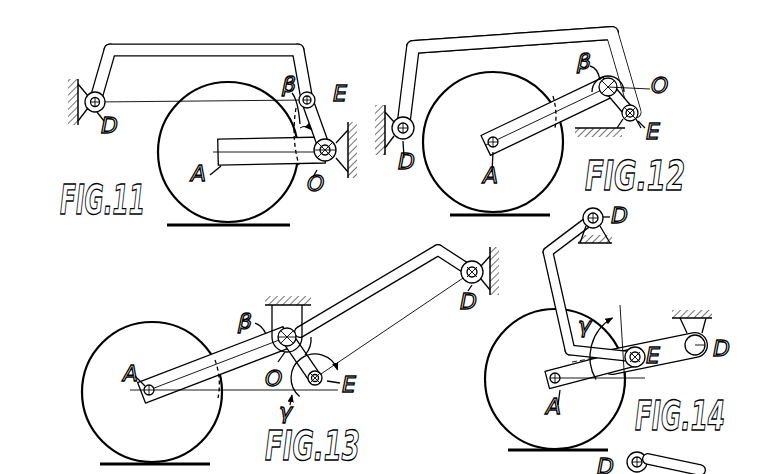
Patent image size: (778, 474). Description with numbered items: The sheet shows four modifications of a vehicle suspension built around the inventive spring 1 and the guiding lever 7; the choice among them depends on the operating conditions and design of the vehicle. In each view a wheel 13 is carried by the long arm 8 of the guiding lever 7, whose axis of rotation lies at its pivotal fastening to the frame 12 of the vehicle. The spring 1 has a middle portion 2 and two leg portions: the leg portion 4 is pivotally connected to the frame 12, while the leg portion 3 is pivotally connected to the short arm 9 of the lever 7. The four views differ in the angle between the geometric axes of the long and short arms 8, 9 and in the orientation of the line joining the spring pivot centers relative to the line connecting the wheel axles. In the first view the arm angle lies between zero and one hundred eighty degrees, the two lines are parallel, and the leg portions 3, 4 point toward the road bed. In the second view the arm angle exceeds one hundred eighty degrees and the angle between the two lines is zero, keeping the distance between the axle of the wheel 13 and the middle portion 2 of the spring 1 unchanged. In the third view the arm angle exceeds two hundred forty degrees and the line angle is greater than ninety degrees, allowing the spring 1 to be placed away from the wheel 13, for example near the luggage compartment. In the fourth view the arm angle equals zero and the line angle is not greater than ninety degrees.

In FIG. 11, the spring 1 is at (235, 42).
In FIG. 12, the spring 1 is at (452, 60).
In FIG. 13, the spring 1 is at (367, 288).
In FIG. 14, the spring 1 is at (566, 300).
In FIG. 12, the middle portion 2 is at (500, 40).
In FIG. 11, the leg portion 3 is at (312, 62).
In FIG. 12, the leg portion 3 is at (627, 52).
In FIG. 13, the leg portion 3 is at (318, 340).
In FIG. 14, the leg portion 3 is at (618, 345).
In FIG. 11, the leg portion 4 is at (105, 58).
In FIG. 12, the leg portion 4 is at (405, 68).
In FIG. 13, the leg portion 4 is at (436, 262).
In FIG. 14, the leg portion 4 is at (553, 256).
In FIG. 11, the guiding lever 7 is at (326, 172).
In FIG. 12, the guiding lever 7 is at (561, 90).
In FIG. 13, the guiding lever 7 is at (242, 382).
In FIG. 14, the guiding lever 7 is at (541, 374).
In FIG. 11, the long arm 8 is at (264, 142).
In FIG. 12, the long arm 8 is at (519, 141).
In FIG. 13, the long arm 8 is at (224, 345).
In FIG. 14, the long arm 8 is at (606, 373).
In FIG. 11, the short arm 9 is at (318, 134).
In FIG. 12, the short arm 9 is at (622, 129).
In FIG. 13, the short arm 9 is at (284, 393).
In FIG. 14, the short arm 9 is at (660, 336).
In FIG. 11, the frame 12 is at (65, 112).
In FIG. 12, the frame 12 is at (380, 156).
In FIG. 13, the frame 12 is at (270, 298).
In FIG. 14, the frame 12 is at (603, 252).
In FIG. 11, the wheel 13 is at (163, 126).
In FIG. 12, the wheel 13 is at (442, 196).
In FIG. 13, the wheel 13 is at (108, 335).
In FIG. 14, the wheel 13 is at (494, 418).